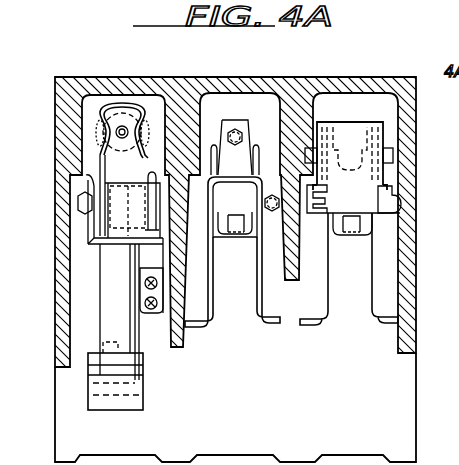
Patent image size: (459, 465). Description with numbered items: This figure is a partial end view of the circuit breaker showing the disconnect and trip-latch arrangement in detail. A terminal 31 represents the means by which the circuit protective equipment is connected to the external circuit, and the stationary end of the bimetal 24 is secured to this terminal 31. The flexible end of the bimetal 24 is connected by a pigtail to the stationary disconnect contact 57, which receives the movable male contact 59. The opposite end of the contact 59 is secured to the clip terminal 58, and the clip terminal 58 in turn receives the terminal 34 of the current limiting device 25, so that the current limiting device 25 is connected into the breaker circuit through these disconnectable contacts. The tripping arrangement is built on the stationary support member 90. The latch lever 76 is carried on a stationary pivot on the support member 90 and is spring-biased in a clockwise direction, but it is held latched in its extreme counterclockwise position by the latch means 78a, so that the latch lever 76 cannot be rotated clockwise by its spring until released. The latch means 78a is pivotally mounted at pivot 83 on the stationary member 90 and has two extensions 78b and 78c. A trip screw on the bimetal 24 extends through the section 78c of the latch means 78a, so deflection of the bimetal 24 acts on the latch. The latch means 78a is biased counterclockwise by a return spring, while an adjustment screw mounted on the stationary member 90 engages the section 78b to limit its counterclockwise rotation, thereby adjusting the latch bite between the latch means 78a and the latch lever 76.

The clip terminal 58 is at (120, 106).
The current limiting device 25 is at (92, 136).
The terminal of the current limiting device 34 is at (112, 149).
The movable male contact 59 is at (82, 176).
The stationary disconnect contact 57 is at (97, 244).
The bimetal 24 is at (106, 309).
The terminal 31 is at (144, 395).
The latch lever 76 is at (222, 219).
The support member 90 is at (266, 325).
The latch means 78a is at (354, 129).
The pivot 83 is at (394, 156).
The section of latch means 78b is at (389, 206).
The section of latch means 78c is at (322, 214).